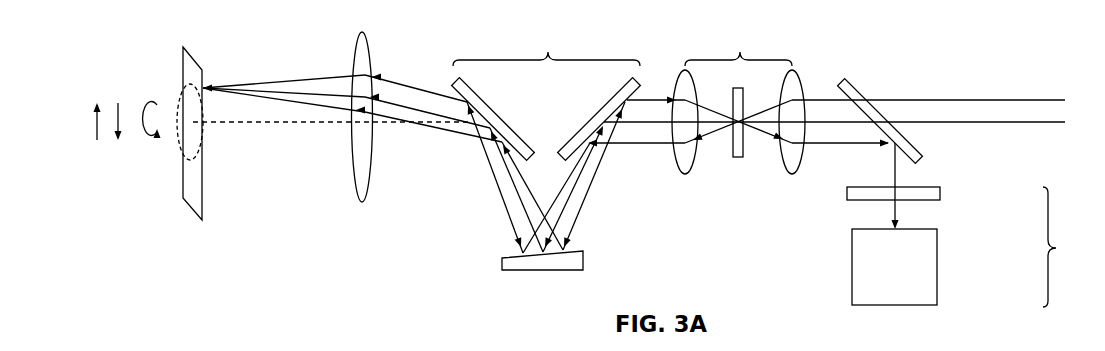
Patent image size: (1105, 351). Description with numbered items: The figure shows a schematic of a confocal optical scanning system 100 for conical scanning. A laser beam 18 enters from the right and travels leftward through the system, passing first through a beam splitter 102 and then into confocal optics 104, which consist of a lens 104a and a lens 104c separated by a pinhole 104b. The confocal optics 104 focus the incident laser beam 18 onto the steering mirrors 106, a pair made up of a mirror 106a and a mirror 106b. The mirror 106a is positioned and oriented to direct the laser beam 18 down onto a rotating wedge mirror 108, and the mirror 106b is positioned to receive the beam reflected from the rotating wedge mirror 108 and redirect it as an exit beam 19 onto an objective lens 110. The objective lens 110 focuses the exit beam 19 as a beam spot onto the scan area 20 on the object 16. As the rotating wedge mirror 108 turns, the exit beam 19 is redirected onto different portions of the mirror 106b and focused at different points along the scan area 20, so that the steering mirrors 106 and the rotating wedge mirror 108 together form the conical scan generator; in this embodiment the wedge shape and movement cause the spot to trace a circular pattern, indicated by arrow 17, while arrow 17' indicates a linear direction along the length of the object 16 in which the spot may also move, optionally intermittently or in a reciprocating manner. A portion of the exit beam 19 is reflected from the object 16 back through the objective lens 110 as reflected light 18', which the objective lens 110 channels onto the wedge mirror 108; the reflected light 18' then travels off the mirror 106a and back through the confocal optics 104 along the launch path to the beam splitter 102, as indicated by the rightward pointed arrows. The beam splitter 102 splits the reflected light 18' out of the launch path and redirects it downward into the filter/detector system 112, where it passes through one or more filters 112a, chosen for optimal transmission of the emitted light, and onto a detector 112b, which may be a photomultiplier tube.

The optical scanning system 100 is at (131, 60).
The object (substrate) 16 is at (190, 210).
The scan area 20 is at (177, 103).
The arrow 17 is at (141, 147).
The arrow 17' is at (87, 107).
The laser beam 18 is at (928, 81).
The reflected light 18' is at (331, 118).
The exit beam 19 is at (414, 87).
The objective lens 110 is at (360, 163).
The steering mirrors 106 is at (546, 93).
The mirror 106a is at (597, 116).
The mirror 106b is at (497, 116).
The rotating wedge mirror 108 is at (584, 259).
The confocal optics 104 is at (727, 130).
The lens 104a is at (790, 175).
The pinhole 104b is at (738, 158).
The lens 104c is at (685, 175).
The beam splitter 102 is at (866, 86).
The filter/detector system 112 is at (972, 236).
The filter 112a is at (942, 192).
The detector 112b is at (938, 270).